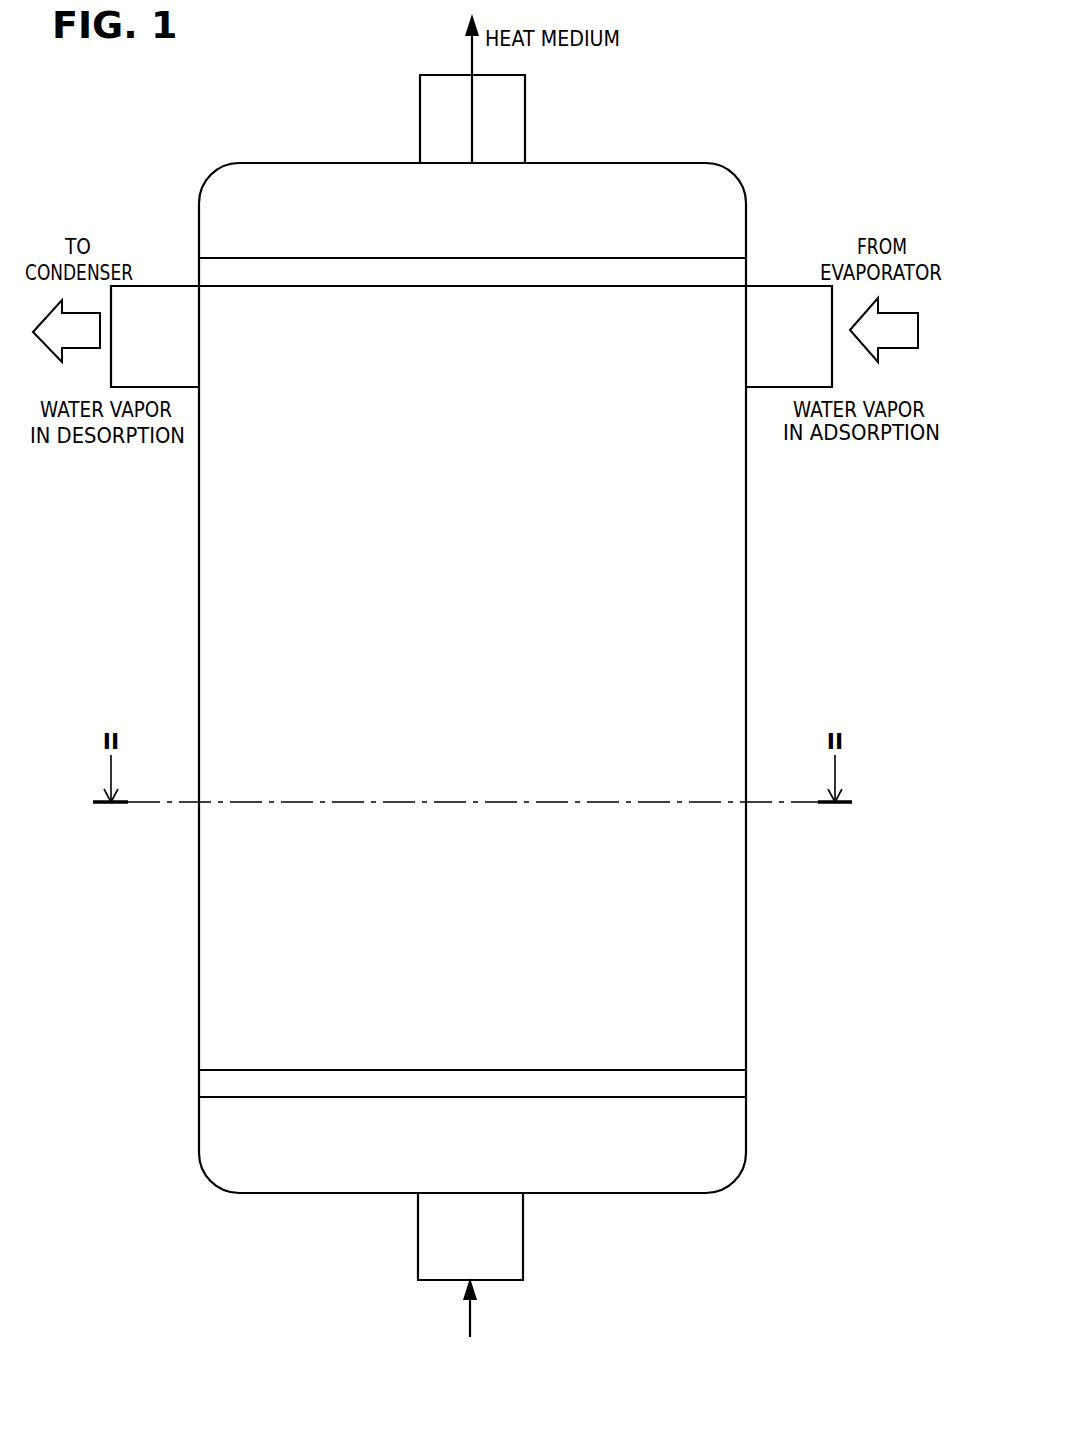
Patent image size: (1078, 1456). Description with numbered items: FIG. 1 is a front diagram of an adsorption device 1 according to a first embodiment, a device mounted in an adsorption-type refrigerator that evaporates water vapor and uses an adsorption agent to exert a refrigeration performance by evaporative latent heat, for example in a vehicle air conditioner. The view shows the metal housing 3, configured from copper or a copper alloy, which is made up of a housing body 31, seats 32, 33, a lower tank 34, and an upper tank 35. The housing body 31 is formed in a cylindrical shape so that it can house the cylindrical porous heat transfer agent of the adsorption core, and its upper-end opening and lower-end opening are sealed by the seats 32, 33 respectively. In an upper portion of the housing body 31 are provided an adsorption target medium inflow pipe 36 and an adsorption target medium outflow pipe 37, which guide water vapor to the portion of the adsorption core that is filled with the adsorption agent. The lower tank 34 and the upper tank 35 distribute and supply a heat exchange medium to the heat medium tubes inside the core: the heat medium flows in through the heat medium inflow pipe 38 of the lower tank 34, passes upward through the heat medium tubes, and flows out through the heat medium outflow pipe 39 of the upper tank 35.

The adsorption device 1 is at (828, 126).
The housing 3 is at (746, 618).
The housing body 31 is at (746, 677).
The seat 32 is at (668, 1088).
The seat 33 is at (622, 272).
The lower tank 34 is at (262, 1160).
The upper tank 35 is at (265, 208).
The adsorption target medium inflow pipe 36 is at (787, 317).
The adsorption target medium outflow pipe 37 is at (152, 317).
The heat medium inflow pipe 38 is at (500, 1232).
The heat medium outflow pipe 39 is at (442, 126).